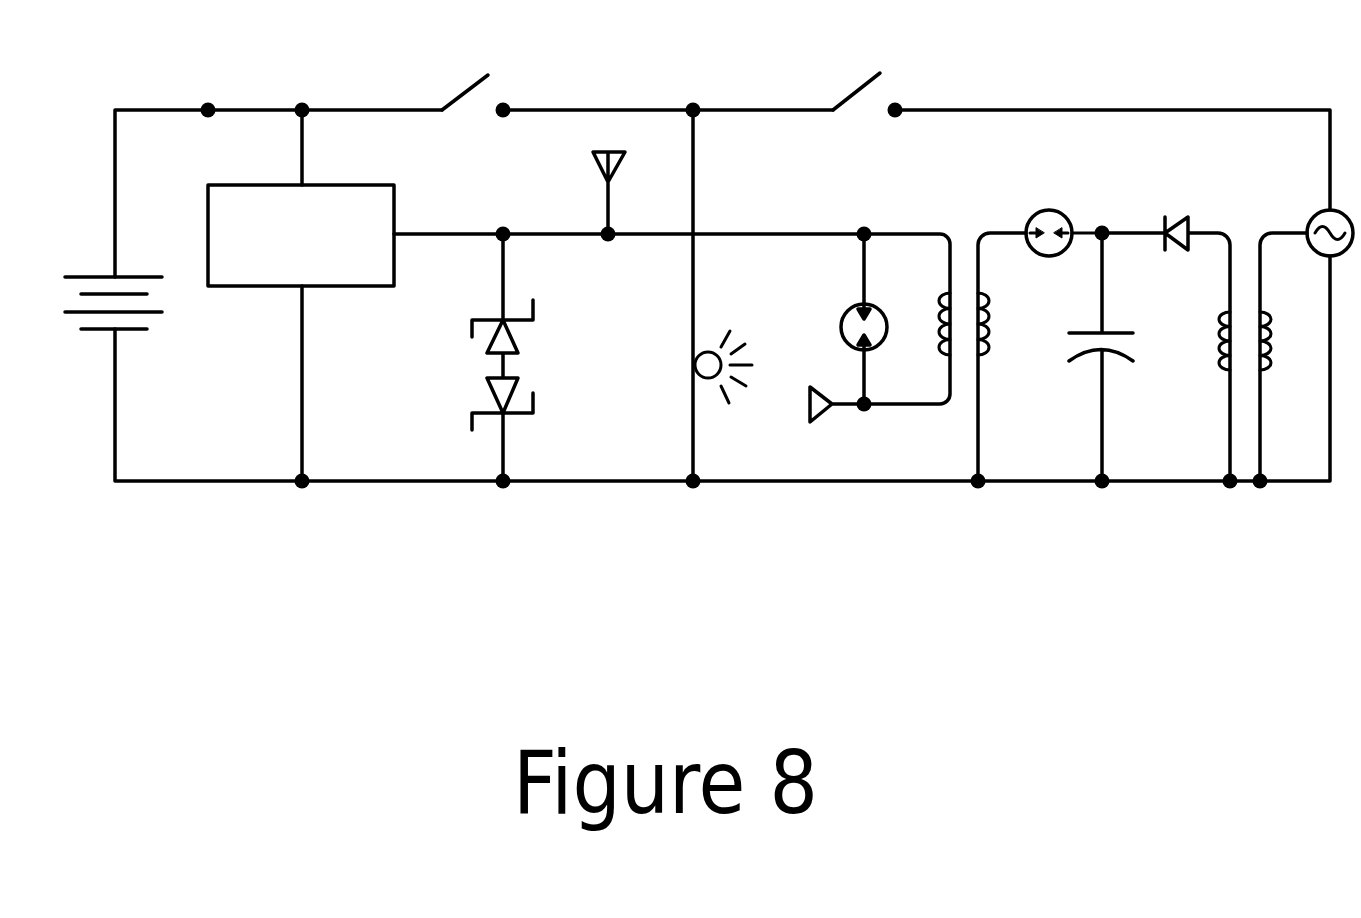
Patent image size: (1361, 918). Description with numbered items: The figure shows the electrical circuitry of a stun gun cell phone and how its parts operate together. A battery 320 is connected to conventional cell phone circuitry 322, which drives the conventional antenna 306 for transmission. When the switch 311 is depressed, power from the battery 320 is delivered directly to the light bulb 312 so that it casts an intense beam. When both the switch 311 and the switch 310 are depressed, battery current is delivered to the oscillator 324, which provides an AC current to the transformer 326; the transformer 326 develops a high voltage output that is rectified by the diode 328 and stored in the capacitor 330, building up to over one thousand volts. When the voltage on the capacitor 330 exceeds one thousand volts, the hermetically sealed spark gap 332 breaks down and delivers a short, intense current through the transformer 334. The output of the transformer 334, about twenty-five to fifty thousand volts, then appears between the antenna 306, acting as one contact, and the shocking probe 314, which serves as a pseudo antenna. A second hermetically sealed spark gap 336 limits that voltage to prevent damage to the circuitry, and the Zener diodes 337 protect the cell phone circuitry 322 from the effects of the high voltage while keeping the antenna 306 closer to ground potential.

The battery 320 is at (107, 281).
The cell phone circuitry 322 is at (301, 295).
The switch 311 is at (460, 71).
The switch 310 is at (857, 72).
The antenna 306 is at (581, 193).
The Zener diodes 337 is at (469, 357).
The light bulb 312 is at (723, 345).
The hermetically sealed spark gap 336 is at (843, 319).
The shocking probe 314 is at (821, 422).
The transformer 334 is at (1005, 357).
The hermetically sealed spark gap 332 is at (1064, 214).
The diode 328 is at (1166, 333).
The capacitor 330 is at (1110, 357).
The oscillator 324 is at (1312, 214).
The transformer 326 is at (1284, 357).